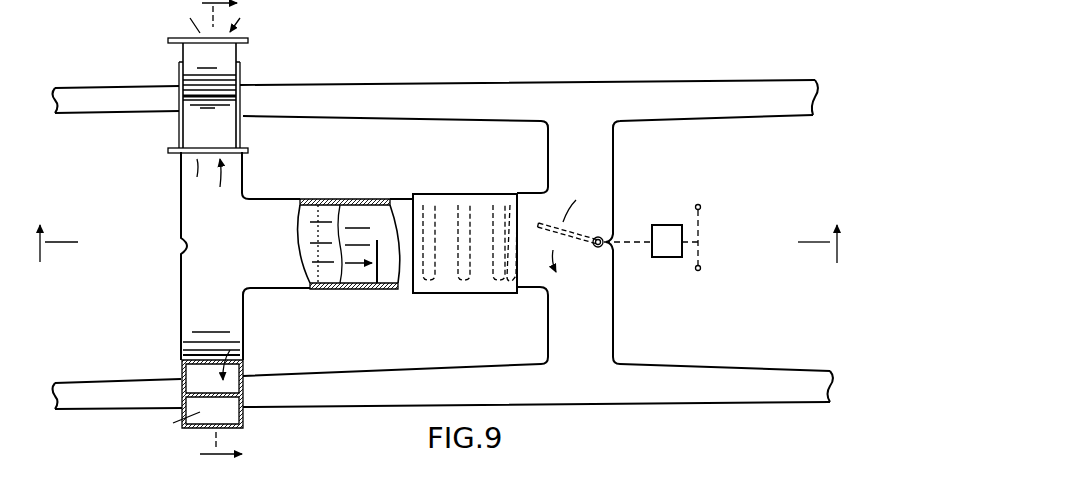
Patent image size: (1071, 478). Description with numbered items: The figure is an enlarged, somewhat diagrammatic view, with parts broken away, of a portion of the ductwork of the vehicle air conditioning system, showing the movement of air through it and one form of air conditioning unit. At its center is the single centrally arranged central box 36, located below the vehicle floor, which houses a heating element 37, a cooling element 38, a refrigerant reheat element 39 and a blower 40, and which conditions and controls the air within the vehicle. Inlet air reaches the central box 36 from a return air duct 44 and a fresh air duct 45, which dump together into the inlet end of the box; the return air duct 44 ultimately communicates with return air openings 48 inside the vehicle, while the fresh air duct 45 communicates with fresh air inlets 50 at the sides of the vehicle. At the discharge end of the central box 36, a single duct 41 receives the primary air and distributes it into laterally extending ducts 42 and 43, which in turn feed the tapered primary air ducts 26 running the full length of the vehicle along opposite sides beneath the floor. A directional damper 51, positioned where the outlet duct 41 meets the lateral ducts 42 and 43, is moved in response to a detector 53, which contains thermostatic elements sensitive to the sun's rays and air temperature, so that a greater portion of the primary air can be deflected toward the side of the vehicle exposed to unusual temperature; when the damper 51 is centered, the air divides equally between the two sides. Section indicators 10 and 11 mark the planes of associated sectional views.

The section line 10- 10 is at (441, 256).
The section line 11- 11 is at (213, 231).
The primary air duct 26 is at (500, 88).
The central box 36 is at (427, 300).
The heating element 37 is at (432, 280).
The cooling element 38 is at (467, 280).
The refrigerant reheat element 39 is at (498, 280).
The blower 40 is at (507, 283).
The single duct 41 is at (549, 309).
The laterally extending duct 42 is at (600, 158).
The laterally extending duct 43 is at (605, 335).
The return air duct 44 is at (318, 202).
The fresh air duct 45 is at (375, 208).
The return air opening 48 is at (243, 160).
The fresh air inlet 50 is at (235, 28).
The directional damper 51 is at (570, 223).
The detector 53 is at (700, 207).